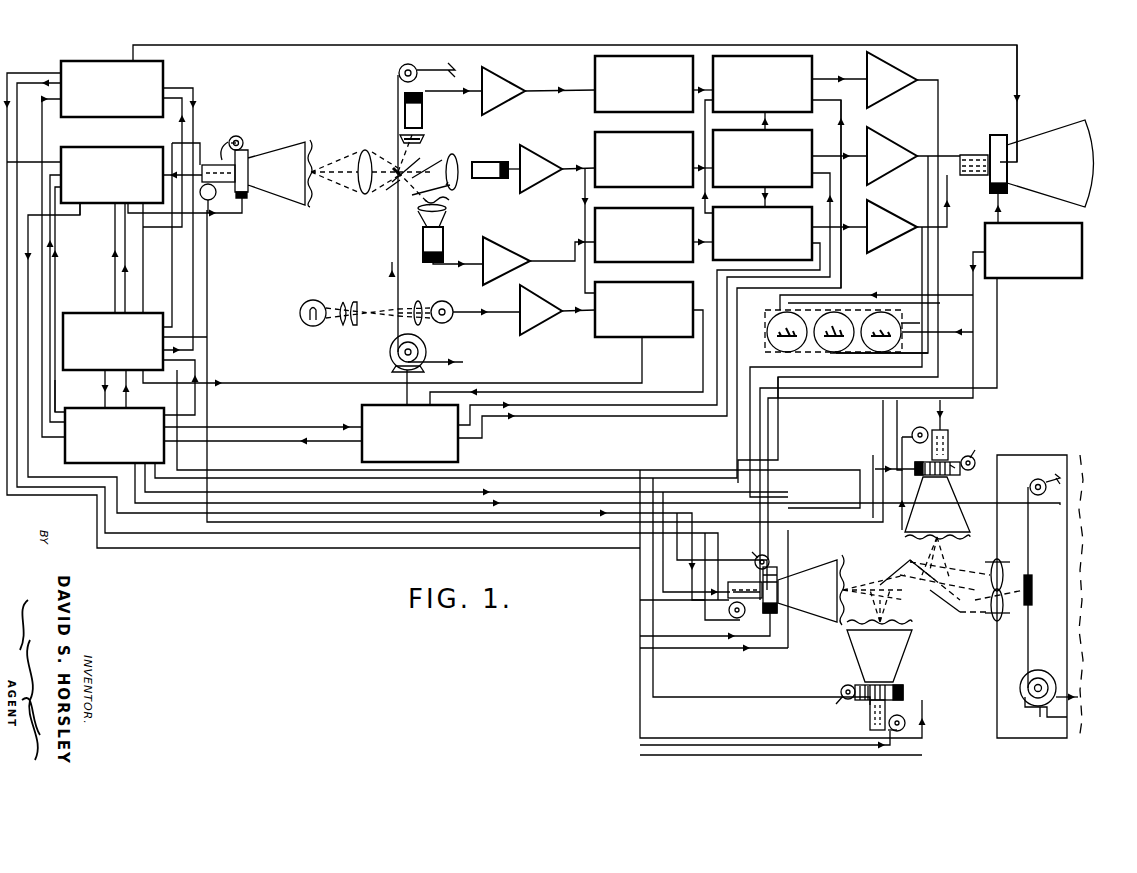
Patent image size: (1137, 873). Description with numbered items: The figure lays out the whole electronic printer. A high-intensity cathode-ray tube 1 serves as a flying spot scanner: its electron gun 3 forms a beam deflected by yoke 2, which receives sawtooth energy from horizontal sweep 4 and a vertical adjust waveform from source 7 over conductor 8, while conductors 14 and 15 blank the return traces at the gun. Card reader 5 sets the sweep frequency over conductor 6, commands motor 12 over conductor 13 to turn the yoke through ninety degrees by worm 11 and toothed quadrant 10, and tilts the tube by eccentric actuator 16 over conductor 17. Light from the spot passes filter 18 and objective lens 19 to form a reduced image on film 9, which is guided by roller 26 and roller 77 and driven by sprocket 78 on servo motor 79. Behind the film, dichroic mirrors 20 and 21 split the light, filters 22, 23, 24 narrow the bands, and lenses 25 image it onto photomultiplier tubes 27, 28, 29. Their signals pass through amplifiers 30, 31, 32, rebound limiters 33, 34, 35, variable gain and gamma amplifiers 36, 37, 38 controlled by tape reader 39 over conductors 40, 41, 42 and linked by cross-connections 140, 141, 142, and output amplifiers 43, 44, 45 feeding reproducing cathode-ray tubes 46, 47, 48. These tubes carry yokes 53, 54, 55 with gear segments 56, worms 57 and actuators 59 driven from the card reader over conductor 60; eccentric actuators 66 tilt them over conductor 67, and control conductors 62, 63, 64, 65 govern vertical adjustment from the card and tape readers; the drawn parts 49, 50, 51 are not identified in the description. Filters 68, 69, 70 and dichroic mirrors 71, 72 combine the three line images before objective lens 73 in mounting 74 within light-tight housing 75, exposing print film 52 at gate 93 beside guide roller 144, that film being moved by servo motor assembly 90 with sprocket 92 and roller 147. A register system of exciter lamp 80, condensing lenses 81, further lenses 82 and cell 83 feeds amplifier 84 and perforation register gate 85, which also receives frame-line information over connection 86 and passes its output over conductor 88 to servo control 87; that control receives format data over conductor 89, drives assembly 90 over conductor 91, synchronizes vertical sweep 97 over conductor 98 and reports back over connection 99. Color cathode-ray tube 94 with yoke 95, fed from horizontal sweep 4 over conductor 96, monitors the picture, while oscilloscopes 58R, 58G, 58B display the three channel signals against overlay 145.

The cathode-ray tube 1 is at (290, 157).
The deflection yoke 2 is at (248, 196).
The electron gun 3 is at (214, 168).
The horizontal sweep 4 is at (112, 89).
The card reader 5 is at (113, 341).
The conductor 6 is at (144, 255).
The vertical adjust scanning waveform source 7 is at (112, 175).
The conductor 8 is at (235, 214).
The original film 9 is at (397, 228).
The quadrant 10 is at (226, 140).
The worm 11 is at (234, 130).
The rotary actuator 12 is at (240, 137).
The conductor 13 is at (172, 280).
The conductor 14 is at (193, 96).
The conductor 15 is at (176, 175).
The eccentric actuator 16 is at (212, 196).
The conductor 17 is at (207, 272).
The light filter 18 is at (313, 146).
The objective lens 19 is at (365, 150).
The dichroic mirror 20 is at (404, 180).
The dichroic mirror 21 is at (430, 160).
The filter 22 is at (402, 148).
The filter 23 is at (452, 196).
The filter 24 is at (453, 165).
The de-motionalizing lenses 25 is at (452, 212).
The guide roller 26 is at (396, 178).
The photomultiplier tube 27 is at (418, 110).
The photomultiplier tube 28 is at (502, 162).
The photomultiplier tube 29 is at (449, 244).
The video amplifier 30 is at (500, 80).
The video amplifier 31 is at (540, 158).
The video amplifier 32 is at (503, 253).
The rebound limiter 33 is at (654, 84).
The rebound limiter 34 is at (654, 159).
The rebound limiter 35 is at (654, 235).
The variable gain and gamma amplifier 36 is at (790, 84).
The variable gain and gamma amplifier 37 is at (790, 158).
The variable gain and gamma amplifier 38 is at (790, 233).
The tape reader 39 is at (114, 436).
The conductor 40 is at (842, 118).
The conductor 41 is at (830, 195).
The conductor 42 is at (716, 268).
The video amplifier 43 is at (890, 74).
The video amplifier 44 is at (890, 151).
The video amplifier 45 is at (890, 222).
The reproducing cathode-ray tube 46 is at (937, 504).
The reproducing cathode-ray tube 47 is at (807, 591).
The reproducing cathode-ray tube 48 is at (879, 656).
The lamp housing 49 is at (945, 436).
The coil 50 is at (752, 605).
The lamp housing 51 is at (870, 730).
The print film 52 is at (1032, 527).
The reproducing yoke 53 is at (950, 478).
The reproducing yoke 54 is at (780, 610).
The reproducing yoke 55 is at (898, 690).
The gear segment 56 is at (854, 581).
The worm 57 is at (842, 690).
The waveform cathode-ray oscilloscope 58R is at (770, 347).
The waveform cathode-ray oscilloscope 58G is at (832, 352).
The waveform cathode-ray oscilloscope 58B is at (893, 340).
The actuator 59 is at (865, 575).
The conductor 60 is at (176, 392).
The control conductor 62 is at (183, 209).
The control conductor 63 is at (60, 385).
The control conductor 64 is at (114, 276).
The control conductor 65 is at (48, 168).
The eccentric actuator 66 is at (912, 432).
The conductor 67 is at (210, 353).
The filter 68 is at (965, 538).
The filter 69 is at (872, 587).
The filter 70 is at (912, 622).
The dichroic mirror 71 is at (898, 574).
The dichroic mirror 72 is at (958, 618).
The objective lens 73 is at (1000, 614).
The mounting 74 is at (1000, 560).
The light-tight housing 75 is at (1020, 458).
The guide roller 77 is at (399, 72).
The drive sprocket 78 is at (392, 348).
The servo motor 79 is at (394, 366).
The exciter lamp 80 is at (310, 302).
The plano-convex condensing lenses 81 is at (352, 298).
The condensing lenses 82 is at (414, 305).
The photoelectric cell 83 is at (444, 300).
The amplifier 84 is at (545, 316).
The perforation register gate 85 is at (644, 309).
The connection 86 is at (584, 195).
The servo control 87 is at (410, 433).
The conductor 88 is at (646, 396).
The conductor 89 is at (258, 427).
The second servo motor assembly 90 is at (1025, 702).
The conductor 91 is at (1028, 390).
The sprocket 92 is at (1034, 672).
The film gate 93 is at (1030, 570).
The color cathode-ray tube 94 is at (1050, 163).
The deflection yoke 95 is at (998, 135).
The conductor 96 is at (1017, 88).
The vertical sweep oscillator 97 is at (1033, 235).
The conductor 98 is at (997, 325).
The report-back connection 99 is at (330, 443).
The cross-connection 140 is at (718, 156).
The cross-connection 141 is at (753, 197).
The cross-connection 142 is at (778, 121).
The guide roller 144 is at (1032, 592).
The transparent overlay 145 is at (768, 312).
The roller 147 is at (1031, 487).